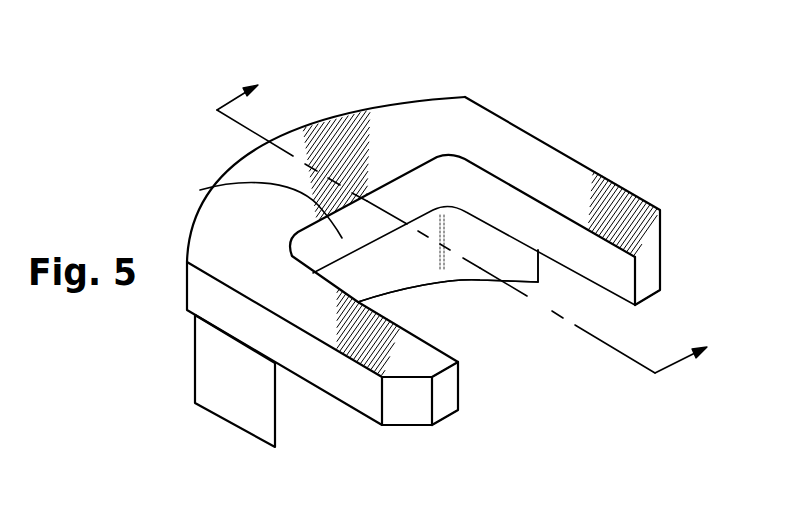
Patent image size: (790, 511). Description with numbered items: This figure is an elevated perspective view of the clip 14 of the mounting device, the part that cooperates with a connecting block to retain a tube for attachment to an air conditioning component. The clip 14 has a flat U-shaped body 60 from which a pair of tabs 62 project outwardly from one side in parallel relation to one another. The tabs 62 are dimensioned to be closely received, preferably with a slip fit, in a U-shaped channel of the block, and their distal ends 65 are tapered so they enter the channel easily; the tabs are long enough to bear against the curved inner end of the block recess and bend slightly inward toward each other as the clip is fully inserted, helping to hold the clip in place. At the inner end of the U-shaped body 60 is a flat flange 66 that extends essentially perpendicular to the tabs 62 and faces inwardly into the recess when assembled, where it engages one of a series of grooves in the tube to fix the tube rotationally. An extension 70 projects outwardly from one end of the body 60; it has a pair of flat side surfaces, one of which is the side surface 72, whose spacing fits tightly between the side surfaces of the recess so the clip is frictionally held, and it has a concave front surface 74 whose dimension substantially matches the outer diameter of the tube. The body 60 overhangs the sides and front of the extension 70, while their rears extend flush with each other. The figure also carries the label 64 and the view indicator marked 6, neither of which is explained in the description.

The clip 14 is at (441, 258).
The flat U-shaped body 60 is at (385, 113).
The tabs 62 is at (643, 215).
The end face of first arm 64 is at (438, 407).
The distal ends of the tabs 65 is at (652, 281).
The flange 66 is at (200, 190).
The extension 70 is at (516, 268).
The flat side surface 72 is at (222, 390).
The concave front surface 74 is at (394, 282).
The section line 6- 6 is at (468, 217).